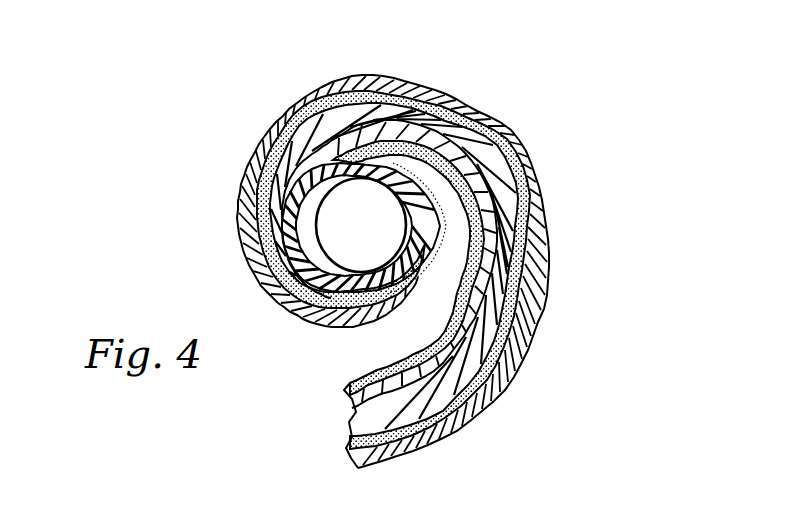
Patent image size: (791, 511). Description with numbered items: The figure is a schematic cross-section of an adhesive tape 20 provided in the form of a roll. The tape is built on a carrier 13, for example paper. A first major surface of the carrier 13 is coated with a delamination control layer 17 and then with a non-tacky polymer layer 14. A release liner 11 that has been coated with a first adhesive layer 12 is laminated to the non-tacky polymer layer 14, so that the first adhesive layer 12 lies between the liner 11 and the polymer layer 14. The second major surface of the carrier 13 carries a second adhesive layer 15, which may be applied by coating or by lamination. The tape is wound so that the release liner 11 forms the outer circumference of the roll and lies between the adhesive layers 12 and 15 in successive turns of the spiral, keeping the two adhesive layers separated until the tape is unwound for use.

The adhesive tape 20 is at (258, 103).
The release liner 11 is at (333, 318).
The first adhesive layer 12 is at (294, 302).
The carrier 13 is at (284, 268).
The non-tacky polymer layer 14 is at (373, 397).
The second adhesive layer 15 is at (412, 364).
The delamination control layer 17 is at (302, 219).